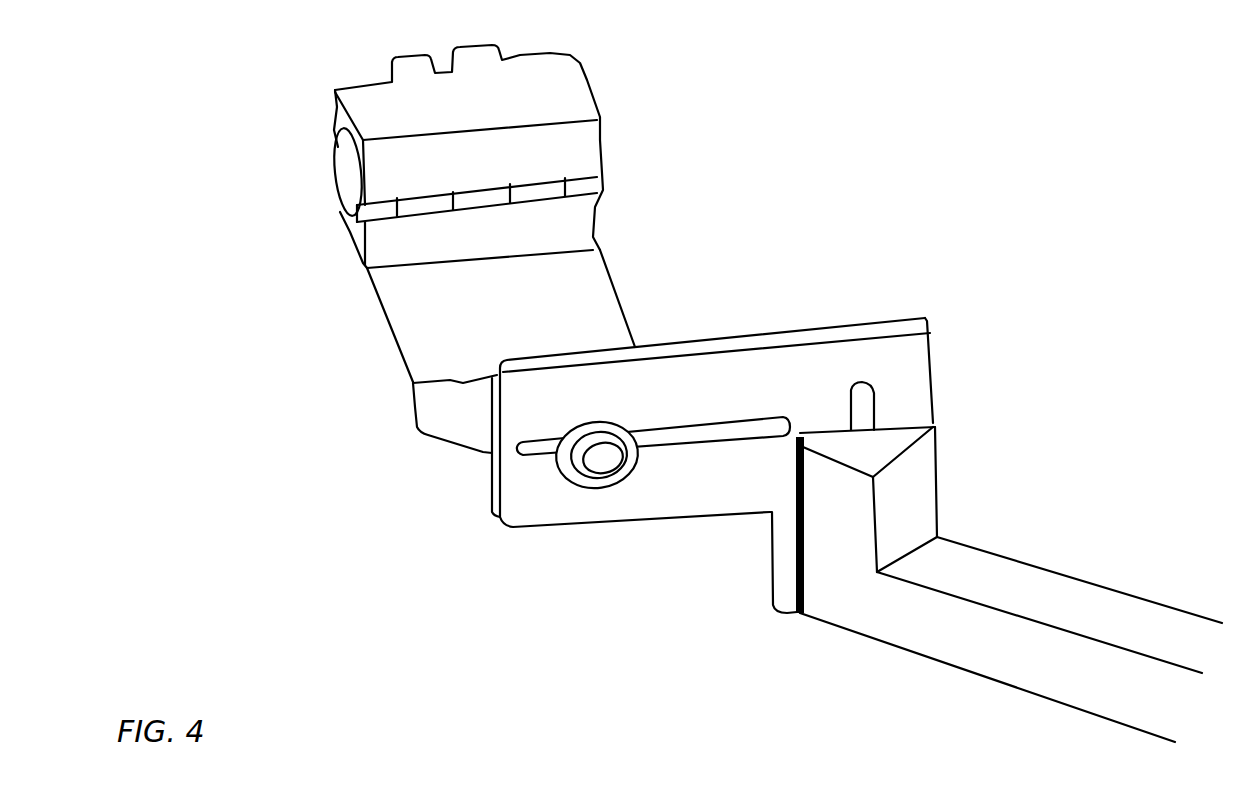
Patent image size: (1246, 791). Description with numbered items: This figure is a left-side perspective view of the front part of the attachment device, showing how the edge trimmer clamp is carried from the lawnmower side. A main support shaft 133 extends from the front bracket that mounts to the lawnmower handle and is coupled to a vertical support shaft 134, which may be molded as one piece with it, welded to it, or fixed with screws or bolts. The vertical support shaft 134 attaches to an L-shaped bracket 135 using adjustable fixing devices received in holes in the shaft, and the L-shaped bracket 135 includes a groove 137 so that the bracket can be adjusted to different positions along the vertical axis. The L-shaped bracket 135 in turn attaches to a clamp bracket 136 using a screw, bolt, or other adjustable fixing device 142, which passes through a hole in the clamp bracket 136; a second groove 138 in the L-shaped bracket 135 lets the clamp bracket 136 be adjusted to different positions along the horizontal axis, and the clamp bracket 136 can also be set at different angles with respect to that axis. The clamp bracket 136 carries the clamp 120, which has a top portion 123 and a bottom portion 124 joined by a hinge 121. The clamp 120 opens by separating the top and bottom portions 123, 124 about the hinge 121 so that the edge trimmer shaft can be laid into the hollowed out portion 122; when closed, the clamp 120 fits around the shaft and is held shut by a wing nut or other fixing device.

The clamp 120 is at (583, 70).
The hinge 121 is at (603, 185).
The hollowed out portion 122 is at (342, 162).
The top portion 123 is at (583, 153).
The bottom portion 124 is at (583, 228).
The main support shaft 133 is at (1067, 593).
The vertical support shaft 134 is at (925, 475).
The L-shaped bracket 135 is at (920, 373).
The clamp bracket 136 is at (417, 340).
The groove 137 is at (862, 377).
The groove 138 is at (685, 447).
The adjustable fixing device 142 is at (595, 468).